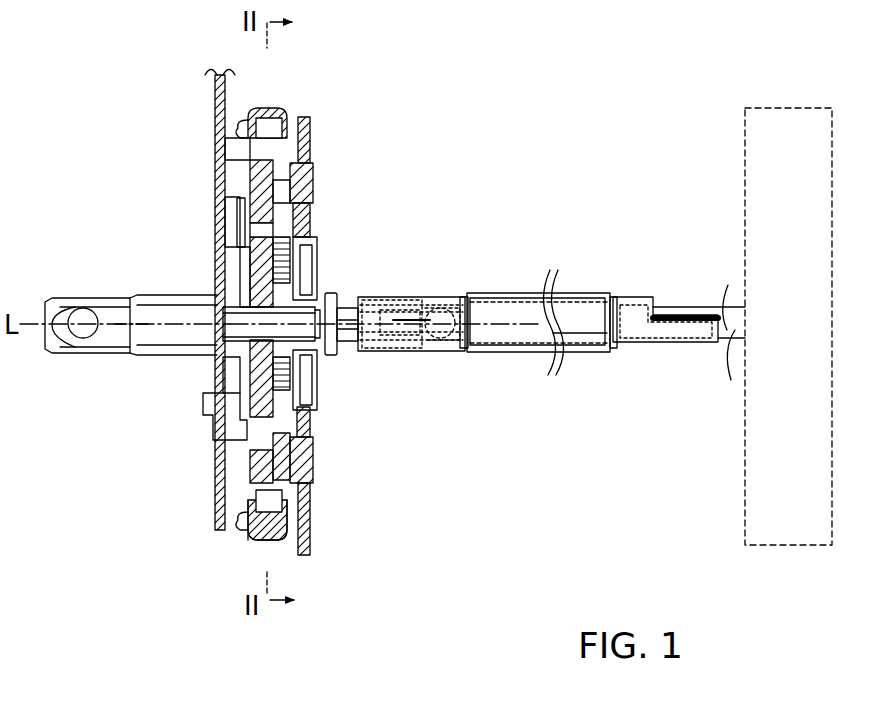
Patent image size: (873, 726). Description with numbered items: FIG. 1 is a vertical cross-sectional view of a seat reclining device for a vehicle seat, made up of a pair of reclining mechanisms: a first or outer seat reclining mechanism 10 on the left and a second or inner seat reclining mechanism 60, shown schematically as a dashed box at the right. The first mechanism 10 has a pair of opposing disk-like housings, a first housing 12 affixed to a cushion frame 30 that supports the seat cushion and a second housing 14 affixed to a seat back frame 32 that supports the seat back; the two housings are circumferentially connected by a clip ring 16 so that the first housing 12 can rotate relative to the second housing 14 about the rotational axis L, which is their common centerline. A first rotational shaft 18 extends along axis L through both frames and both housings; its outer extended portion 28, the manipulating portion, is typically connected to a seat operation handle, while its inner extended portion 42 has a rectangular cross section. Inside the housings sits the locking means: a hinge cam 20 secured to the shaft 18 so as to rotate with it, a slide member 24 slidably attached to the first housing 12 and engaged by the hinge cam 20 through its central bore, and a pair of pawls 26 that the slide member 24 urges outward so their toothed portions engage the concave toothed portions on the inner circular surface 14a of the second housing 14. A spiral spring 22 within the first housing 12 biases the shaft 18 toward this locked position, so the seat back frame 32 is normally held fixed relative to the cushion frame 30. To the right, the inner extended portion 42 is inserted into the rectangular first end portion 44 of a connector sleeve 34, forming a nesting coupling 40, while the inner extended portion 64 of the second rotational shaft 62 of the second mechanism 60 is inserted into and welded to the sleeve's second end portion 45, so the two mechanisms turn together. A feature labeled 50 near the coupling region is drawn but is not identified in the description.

The first seat reclining mechanism 10 is at (310, 83).
The first housing 12 is at (305, 214).
The second housing 14 is at (235, 376).
The inner circular surface 14a is at (303, 165).
The clip ring 16 is at (268, 108).
The first rotational shaft 18 is at (306, 300).
The hinge cam 20 is at (256, 282).
The spiral spring 22 is at (310, 398).
The slide member 24 is at (240, 250).
The pawls 26 is at (245, 190).
The outer extended portion 28 is at (90, 297).
The cushion frame 30 is at (312, 524).
The seat back frame 32 is at (215, 118).
The connector sleeve 34 is at (505, 293).
The nesting coupling 40 is at (432, 283).
The inner extended portion 42 is at (400, 360).
The first end portion 44 is at (405, 293).
The second end portion 45 is at (655, 296).
The pin hole 50 is at (437, 360).
The second seat reclining mechanism 60 is at (748, 108).
The second rotational shaft 62 is at (726, 338).
The inner extended portion 64 is at (637, 345).